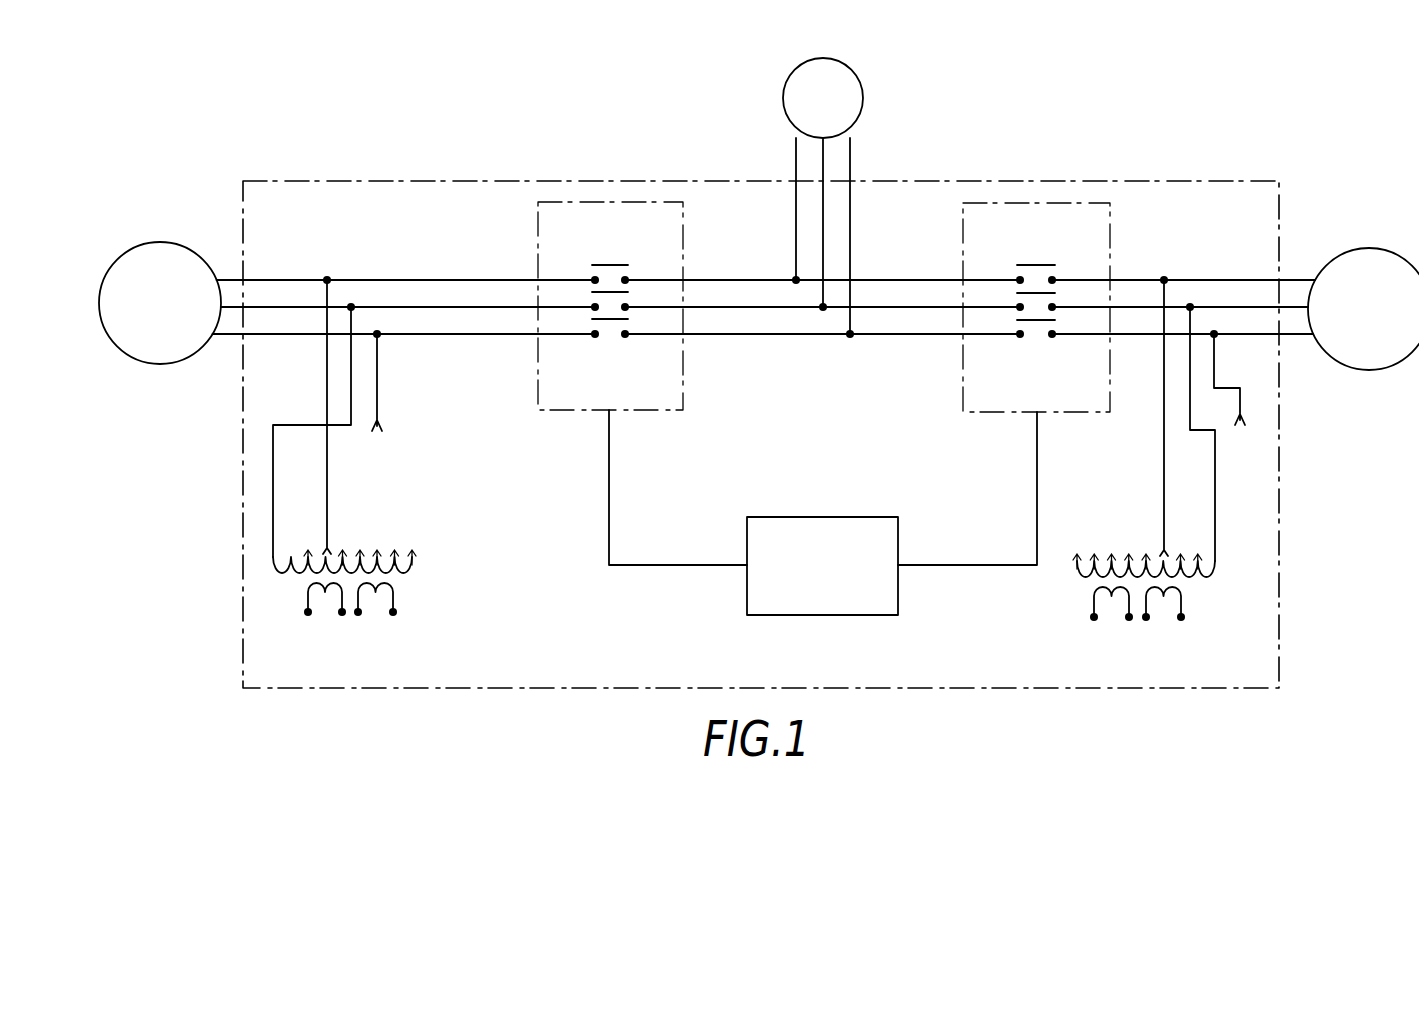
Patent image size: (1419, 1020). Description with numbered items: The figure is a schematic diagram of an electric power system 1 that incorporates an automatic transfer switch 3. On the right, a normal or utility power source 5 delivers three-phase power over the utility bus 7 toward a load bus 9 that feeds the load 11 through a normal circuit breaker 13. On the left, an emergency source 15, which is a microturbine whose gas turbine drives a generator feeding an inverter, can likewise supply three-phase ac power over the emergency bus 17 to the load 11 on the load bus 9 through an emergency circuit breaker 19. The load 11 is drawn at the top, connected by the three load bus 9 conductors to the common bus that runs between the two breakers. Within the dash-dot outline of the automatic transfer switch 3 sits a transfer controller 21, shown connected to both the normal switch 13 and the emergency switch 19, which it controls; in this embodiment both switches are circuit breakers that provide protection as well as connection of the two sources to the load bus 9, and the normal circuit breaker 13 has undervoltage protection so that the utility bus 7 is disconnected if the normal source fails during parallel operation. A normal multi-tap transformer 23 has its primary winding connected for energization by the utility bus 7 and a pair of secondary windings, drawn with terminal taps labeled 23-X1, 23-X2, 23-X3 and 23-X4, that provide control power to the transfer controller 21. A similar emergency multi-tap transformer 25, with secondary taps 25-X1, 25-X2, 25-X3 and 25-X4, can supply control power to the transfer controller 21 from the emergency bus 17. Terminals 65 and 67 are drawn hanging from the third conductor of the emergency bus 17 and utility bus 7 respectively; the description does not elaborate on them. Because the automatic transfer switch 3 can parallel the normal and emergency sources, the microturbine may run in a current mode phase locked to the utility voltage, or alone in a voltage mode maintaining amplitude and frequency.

The electric power system 1 is at (1001, 136).
The automatic transfer switch 3 is at (1182, 181).
The normal or utility power source 5 is at (1378, 249).
The utility bus 7 is at (1297, 273).
The load bus 9 is at (853, 155).
The load 11 is at (857, 74).
The normal circuit breaker 13 is at (1110, 236).
The emergency source 15 is at (140, 244).
The emergency bus 17 is at (230, 262).
The emergency circuit breaker 19 is at (684, 234).
The transfer controller 21 is at (865, 517).
The normal multi-tap transformer 23 is at (1193, 587).
The transformer secondary tap X1 23-X1 is at (1181, 621).
The transformer secondary tap X2 23-X2 is at (1146, 621).
The transformer secondary tap X3 23-X3 is at (1128, 621).
The transformer secondary tap X4 23-X4 is at (1090, 617).
The emergency multi-tap transformer 25 is at (427, 555).
The transformer secondary tap X1 25-X1 is at (305, 614).
The transformer secondary tap X2 25-X2 is at (342, 616).
The transformer secondary tap X3 25-X3 is at (361, 614).
The transformer secondary tap X4 25-X4 is at (397, 612).
The neutral terminal 65 is at (378, 366).
The neutral terminal 67 is at (1226, 388).